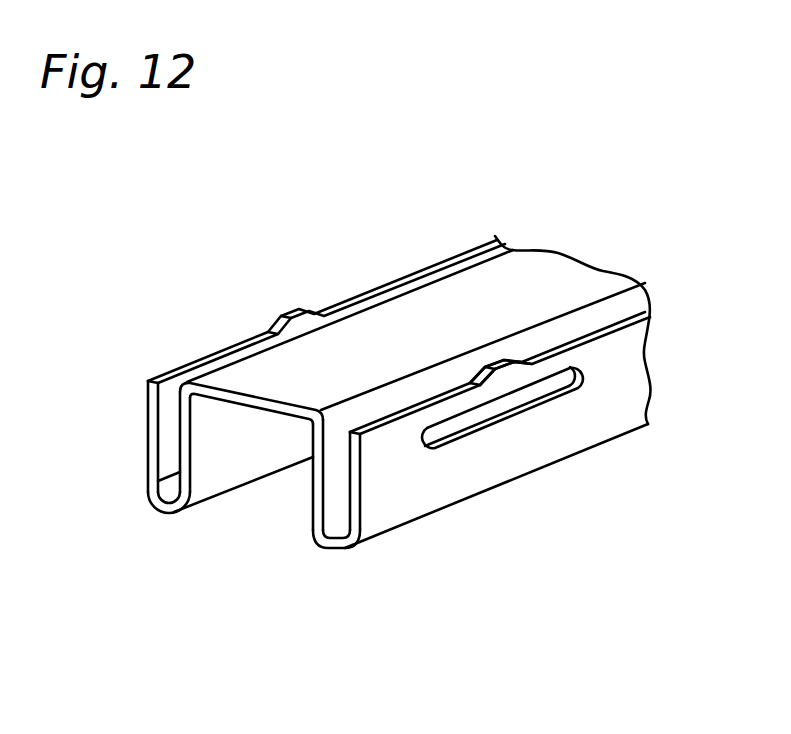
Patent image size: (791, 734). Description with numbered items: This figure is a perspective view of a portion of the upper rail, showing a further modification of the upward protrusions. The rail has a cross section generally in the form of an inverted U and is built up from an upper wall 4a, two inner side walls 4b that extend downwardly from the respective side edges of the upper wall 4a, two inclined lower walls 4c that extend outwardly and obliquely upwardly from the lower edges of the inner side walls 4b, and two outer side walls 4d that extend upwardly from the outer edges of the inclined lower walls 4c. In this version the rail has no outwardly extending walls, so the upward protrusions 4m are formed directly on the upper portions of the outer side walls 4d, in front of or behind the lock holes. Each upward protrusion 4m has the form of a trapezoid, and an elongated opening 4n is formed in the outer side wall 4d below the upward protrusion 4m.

The upper wall 4a is at (433, 310).
The inner side walls 4b is at (318, 493).
The inclined lower walls 4c is at (340, 543).
The outer side walls 4d is at (417, 483).
The upward protrusions 4m is at (503, 377).
The elongated opening 4n is at (572, 380).